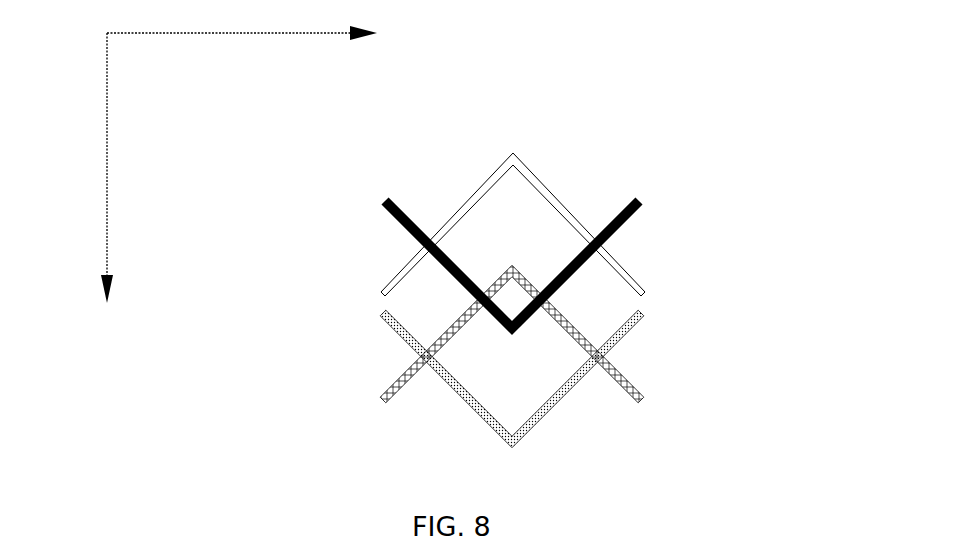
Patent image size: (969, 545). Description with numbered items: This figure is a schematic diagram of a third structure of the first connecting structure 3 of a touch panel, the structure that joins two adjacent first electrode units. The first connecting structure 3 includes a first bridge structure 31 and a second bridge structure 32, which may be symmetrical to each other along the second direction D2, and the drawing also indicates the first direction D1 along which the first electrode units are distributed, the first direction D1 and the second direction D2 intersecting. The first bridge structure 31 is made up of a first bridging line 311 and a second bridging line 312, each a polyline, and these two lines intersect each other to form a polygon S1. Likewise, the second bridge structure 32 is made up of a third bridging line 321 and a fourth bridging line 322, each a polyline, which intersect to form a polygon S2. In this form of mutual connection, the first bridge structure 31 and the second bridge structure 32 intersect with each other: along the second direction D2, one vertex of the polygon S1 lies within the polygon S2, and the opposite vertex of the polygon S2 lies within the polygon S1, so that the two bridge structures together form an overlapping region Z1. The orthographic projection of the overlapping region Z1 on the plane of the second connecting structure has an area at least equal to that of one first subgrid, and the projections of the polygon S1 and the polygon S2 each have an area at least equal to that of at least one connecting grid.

The first connecting structure 3 is at (521, 100).
The first bridge structure 31 is at (238, 178).
The first bridging line 311 is at (383, 203).
The second bridging line 312 is at (383, 290).
The second bridge structure 32 is at (788, 288).
The third bridging line 321 is at (641, 313).
The fourth bridging line 322 is at (643, 398).
The polygon S1 is at (552, 247).
The polygon S2 is at (552, 357).
The overlapping region Z1 is at (506, 300).
The first direction D1 is at (243, 20).
The second direction D2 is at (80, 169).